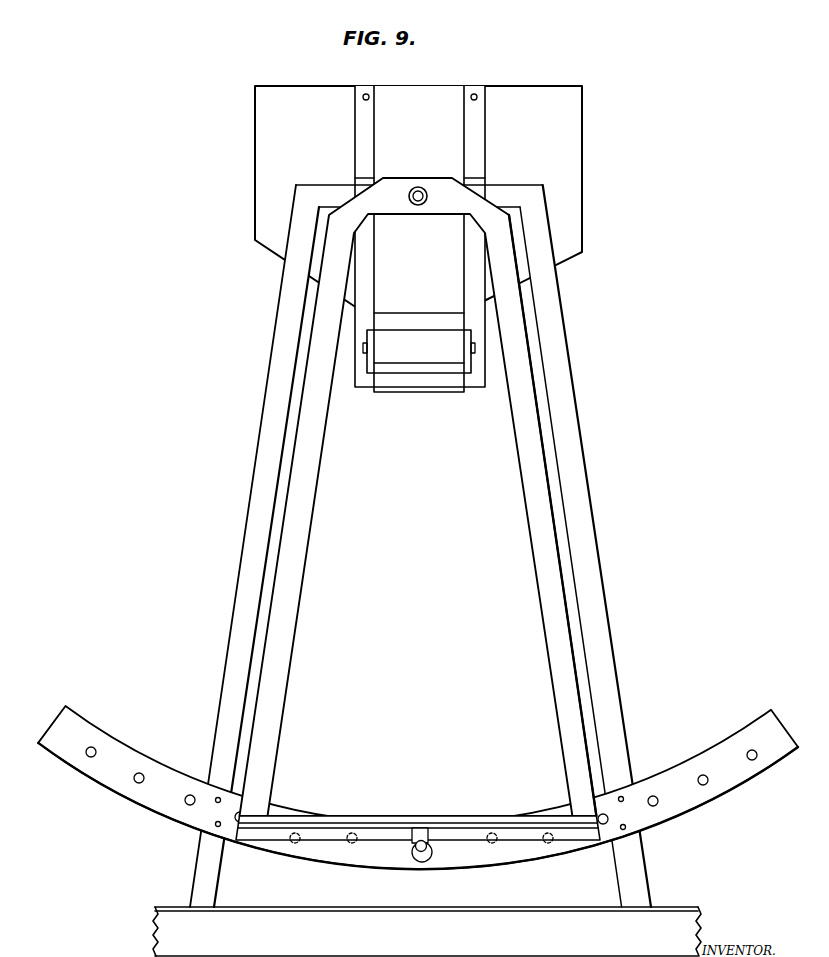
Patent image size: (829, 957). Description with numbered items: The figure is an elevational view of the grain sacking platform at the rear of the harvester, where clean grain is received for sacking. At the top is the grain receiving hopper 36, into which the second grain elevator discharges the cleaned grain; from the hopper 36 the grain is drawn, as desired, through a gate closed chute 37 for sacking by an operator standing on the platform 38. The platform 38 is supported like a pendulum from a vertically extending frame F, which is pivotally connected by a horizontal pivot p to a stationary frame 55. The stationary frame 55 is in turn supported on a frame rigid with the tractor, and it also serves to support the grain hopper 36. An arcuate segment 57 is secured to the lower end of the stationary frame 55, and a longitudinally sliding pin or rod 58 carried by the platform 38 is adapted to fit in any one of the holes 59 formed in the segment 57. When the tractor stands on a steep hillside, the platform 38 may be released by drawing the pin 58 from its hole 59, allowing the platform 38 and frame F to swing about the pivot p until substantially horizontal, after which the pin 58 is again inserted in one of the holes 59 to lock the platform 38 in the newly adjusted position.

The grain receiving hopper 36 is at (573, 117).
The gate closed chute 37 is at (387, 298).
The horizontal pivot p is at (420, 190).
The vertically extending frame F is at (420, 546).
The stationary frame 55 is at (582, 486).
The arcuate segment 57 is at (418, 787).
The holes 59 is at (699, 777).
The platform 38 is at (368, 816).
The longitudinally sliding pin 58 is at (408, 845).